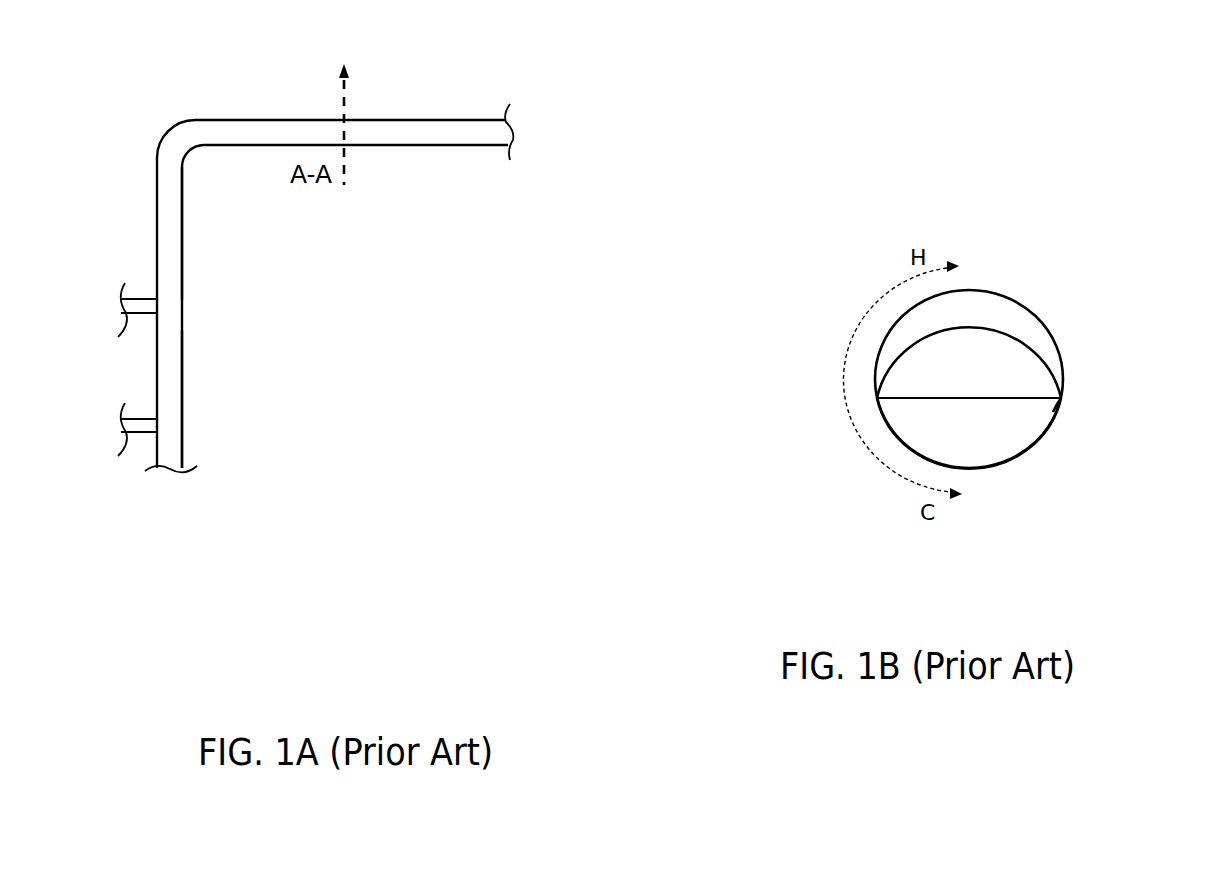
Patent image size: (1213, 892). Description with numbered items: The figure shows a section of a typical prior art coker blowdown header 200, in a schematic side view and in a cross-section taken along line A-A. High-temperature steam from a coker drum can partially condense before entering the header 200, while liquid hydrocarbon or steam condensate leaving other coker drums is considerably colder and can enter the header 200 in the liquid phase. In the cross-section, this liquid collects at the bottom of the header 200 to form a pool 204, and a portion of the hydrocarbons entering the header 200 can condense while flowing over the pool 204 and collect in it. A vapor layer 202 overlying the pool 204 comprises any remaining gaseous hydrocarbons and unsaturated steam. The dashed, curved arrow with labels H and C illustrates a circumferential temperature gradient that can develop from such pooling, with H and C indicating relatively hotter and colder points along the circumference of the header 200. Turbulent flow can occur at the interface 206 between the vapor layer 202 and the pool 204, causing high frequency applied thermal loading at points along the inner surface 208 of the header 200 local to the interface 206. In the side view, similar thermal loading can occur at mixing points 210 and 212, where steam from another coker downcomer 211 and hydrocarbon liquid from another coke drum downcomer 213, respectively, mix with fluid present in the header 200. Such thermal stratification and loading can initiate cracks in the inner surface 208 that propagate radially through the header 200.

In FIG. 1A, the blowdown header 200 is at (419, 263).
In FIG. 1B, the blowdown header 200 is at (1049, 305).
In FIG. 1A, the mixing point 210 is at (171, 303).
In FIG. 1A, the coker downcomer 211 is at (147, 297).
In FIG. 1A, the mixing point 212 is at (171, 427).
In FIG. 1A, the coke drum downcomer 213 is at (138, 417).
In FIG. 1B, the vapor layer 202 is at (973, 328).
In FIG. 1B, the pool 204 is at (990, 435).
In FIG. 1B, the interface 206 is at (1018, 398).
In FIG. 1B, the inner surface 208 is at (1053, 412).